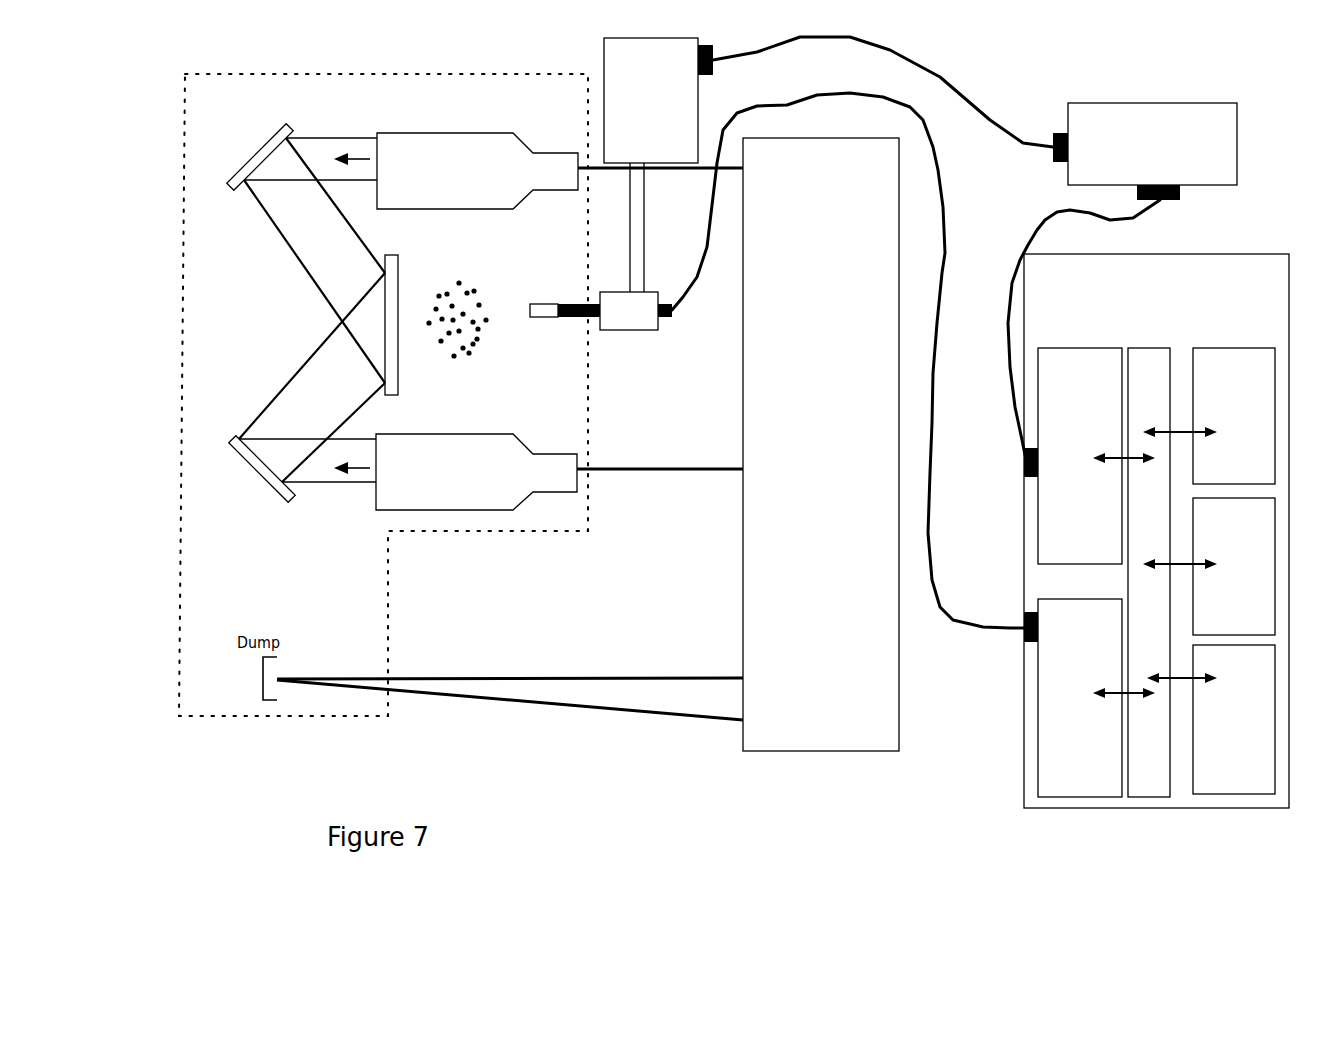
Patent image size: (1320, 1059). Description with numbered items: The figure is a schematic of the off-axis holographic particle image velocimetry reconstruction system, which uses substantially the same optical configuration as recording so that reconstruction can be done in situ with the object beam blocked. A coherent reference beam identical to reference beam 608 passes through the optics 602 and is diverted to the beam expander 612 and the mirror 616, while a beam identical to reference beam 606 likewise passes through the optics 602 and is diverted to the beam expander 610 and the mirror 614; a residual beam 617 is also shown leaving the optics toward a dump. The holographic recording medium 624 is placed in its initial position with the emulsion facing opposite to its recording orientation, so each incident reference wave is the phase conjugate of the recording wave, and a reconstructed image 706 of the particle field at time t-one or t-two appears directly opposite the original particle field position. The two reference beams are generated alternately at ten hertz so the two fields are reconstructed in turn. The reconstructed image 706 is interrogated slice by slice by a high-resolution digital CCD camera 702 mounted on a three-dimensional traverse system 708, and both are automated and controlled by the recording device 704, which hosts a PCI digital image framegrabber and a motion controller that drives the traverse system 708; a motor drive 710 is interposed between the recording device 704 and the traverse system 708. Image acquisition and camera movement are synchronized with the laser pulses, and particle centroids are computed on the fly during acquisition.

The optics 602 is at (821, 444).
The reference beam 606 is at (660, 185).
The reference beam 608 is at (660, 451).
The beam expander 610 is at (477, 171).
The beam expander 612 is at (476, 472).
The mirror 614 is at (255, 170).
The mirror 616 is at (258, 469).
The residual beam to dump 617 is at (510, 681).
The holographic recording medium 624 is at (398, 256).
The digital CCD camera 702 is at (625, 329).
The recording device 704 is at (1156, 531).
The reconstructed image 706 is at (460, 352).
The three-dimensional traverse system 708 is at (658, 165).
The motor drive 710 is at (1145, 151).